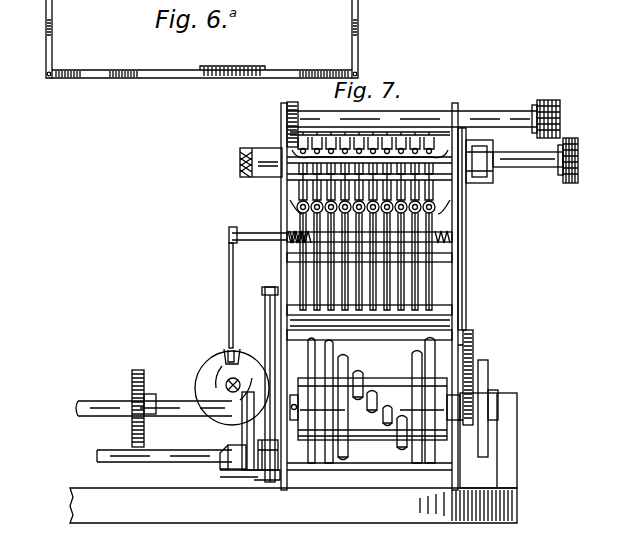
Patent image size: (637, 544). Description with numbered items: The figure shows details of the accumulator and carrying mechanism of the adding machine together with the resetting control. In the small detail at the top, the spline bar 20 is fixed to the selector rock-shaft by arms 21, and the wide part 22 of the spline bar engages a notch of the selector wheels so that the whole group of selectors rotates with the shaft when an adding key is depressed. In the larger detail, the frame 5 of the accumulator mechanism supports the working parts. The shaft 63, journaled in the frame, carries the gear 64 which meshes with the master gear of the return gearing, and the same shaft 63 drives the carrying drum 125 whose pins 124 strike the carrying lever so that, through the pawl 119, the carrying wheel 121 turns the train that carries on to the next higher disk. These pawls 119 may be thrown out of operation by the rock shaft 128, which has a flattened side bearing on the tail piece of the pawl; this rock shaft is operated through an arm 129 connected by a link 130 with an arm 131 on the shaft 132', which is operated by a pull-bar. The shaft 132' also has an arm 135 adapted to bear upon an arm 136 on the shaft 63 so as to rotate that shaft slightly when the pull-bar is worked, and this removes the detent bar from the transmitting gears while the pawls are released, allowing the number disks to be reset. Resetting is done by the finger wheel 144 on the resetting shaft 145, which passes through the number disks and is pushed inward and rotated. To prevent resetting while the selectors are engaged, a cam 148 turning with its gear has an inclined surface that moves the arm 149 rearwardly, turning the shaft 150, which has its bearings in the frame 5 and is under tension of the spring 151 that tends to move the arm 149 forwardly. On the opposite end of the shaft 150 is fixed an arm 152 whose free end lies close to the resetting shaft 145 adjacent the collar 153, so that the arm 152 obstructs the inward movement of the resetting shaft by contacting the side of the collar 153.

In FIG. 6A, the spline bar 20 is at (115, 72).
In FIG. 6A, the arms 21 is at (52, 52).
In FIG. 6A, the wide part of spline bar 22 is at (267, 70).
In FIG. 7, the frame of the accumulator mechanism 5 is at (281, 129).
In FIG. 7, the shaft 63 is at (94, 401).
In FIG. 7, the gear 64 is at (145, 384).
In FIG. 7, the pawl 119 is at (440, 262).
In FIG. 7, the carrying wheel 121 is at (437, 270).
In FIG. 7, the pins or arms on carrying drum 124 is at (362, 378).
In FIG. 7, the carrying drum 125 is at (375, 409).
In FIG. 7, the rock shaft 128 is at (440, 306).
In FIG. 7, the arm 129 is at (265, 294).
In FIG. 7, the link 130 is at (246, 361).
In FIG. 7, the arm 131 is at (272, 470).
In FIG. 7, the shaft 132' is at (164, 470).
In FIG. 7, the arm 135 is at (222, 468).
In FIG. 7, the arm 136 is at (242, 420).
In FIG. 7, the finger wheel 144 is at (578, 153).
In FIG. 7, the resetting shaft 145 is at (538, 168).
In FIG. 7, the cam 148 is at (222, 352).
In FIG. 7, the arm 149 is at (229, 300).
In FIG. 7, the shaft 150 is at (258, 233).
In FIG. 7, the spring 151 is at (287, 252).
In FIG. 7, the arm 152 is at (466, 215).
In FIG. 7, the cam or collar 153 is at (478, 178).